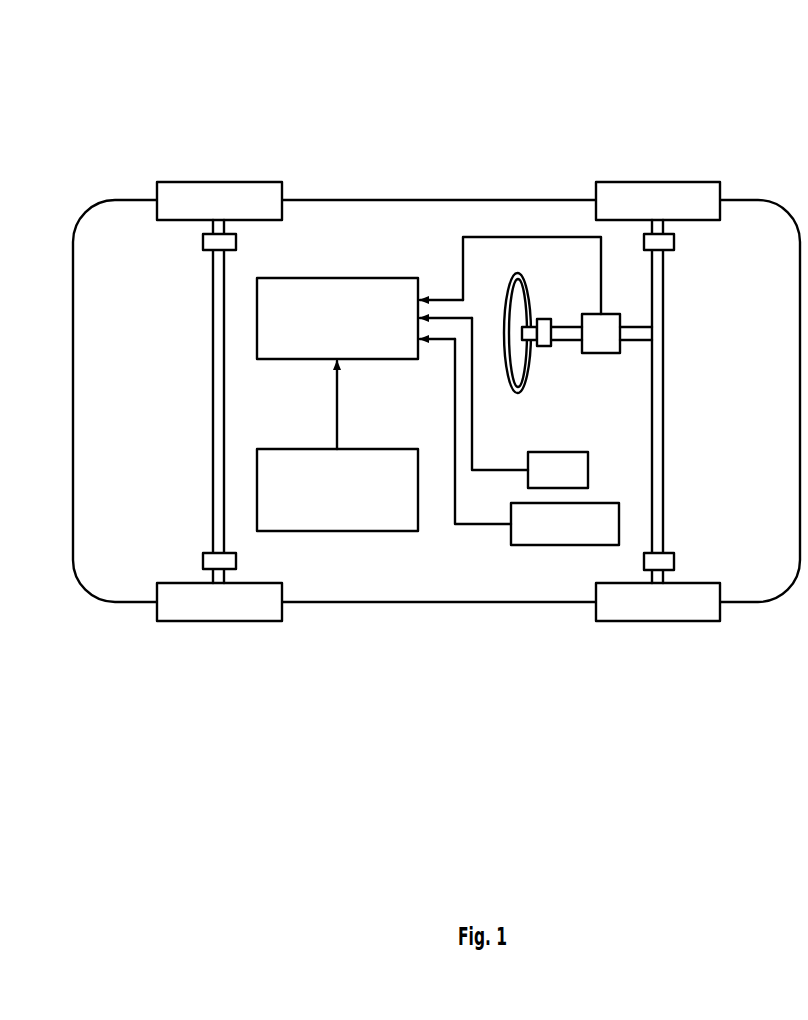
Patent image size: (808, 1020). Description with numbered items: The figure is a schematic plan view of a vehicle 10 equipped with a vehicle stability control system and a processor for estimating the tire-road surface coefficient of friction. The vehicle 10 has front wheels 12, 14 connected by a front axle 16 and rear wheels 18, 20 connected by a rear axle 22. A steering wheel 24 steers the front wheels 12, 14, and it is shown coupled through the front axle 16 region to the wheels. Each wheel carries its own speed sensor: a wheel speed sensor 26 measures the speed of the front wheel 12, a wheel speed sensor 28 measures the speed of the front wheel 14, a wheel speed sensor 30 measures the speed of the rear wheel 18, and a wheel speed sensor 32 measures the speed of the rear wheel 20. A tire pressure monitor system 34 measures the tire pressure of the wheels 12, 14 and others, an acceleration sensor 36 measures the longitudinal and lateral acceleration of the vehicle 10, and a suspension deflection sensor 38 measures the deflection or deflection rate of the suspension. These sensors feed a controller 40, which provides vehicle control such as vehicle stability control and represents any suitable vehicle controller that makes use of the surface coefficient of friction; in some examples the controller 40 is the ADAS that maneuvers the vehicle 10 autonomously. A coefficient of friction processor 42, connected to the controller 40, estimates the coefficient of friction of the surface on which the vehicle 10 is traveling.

The vehicle 10 is at (619, 110).
The front wheel 12 is at (695, 182).
The front wheel 14 is at (658, 621).
The front axle 16 is at (663, 494).
The rear wheel 18 is at (215, 182).
The rear wheel 20 is at (219, 622).
The rear axle 22 is at (213, 402).
The steering wheel 24 is at (518, 393).
The wheel speed sensor 26 is at (674, 242).
The wheel speed sensor 28 is at (674, 563).
The wheel speed sensor 30 is at (203, 238).
The wheel speed sensor 32 is at (203, 565).
The tire pressure monitor system 34 is at (588, 470).
The acceleration sensor 36 is at (545, 545).
The suspension deflection sensor 38 is at (601, 353).
The controller 40 is at (350, 278).
The coefficient of friction processor 42 is at (349, 532).